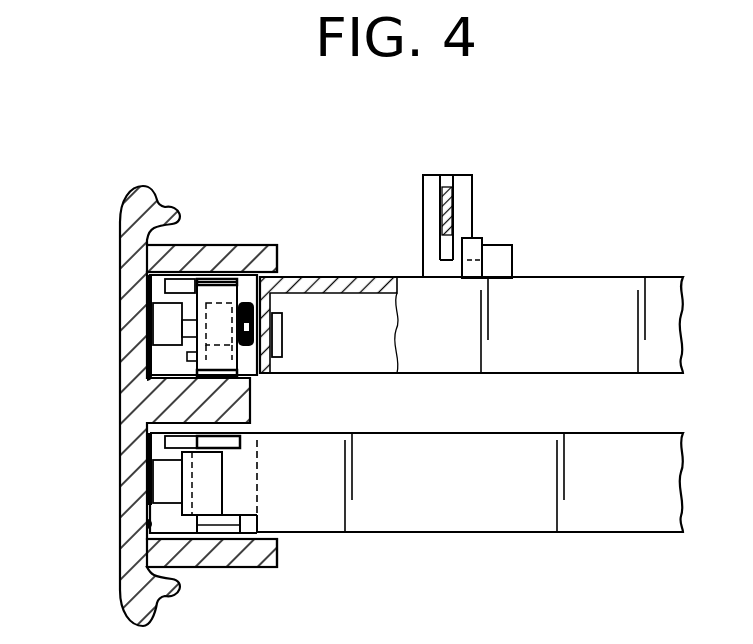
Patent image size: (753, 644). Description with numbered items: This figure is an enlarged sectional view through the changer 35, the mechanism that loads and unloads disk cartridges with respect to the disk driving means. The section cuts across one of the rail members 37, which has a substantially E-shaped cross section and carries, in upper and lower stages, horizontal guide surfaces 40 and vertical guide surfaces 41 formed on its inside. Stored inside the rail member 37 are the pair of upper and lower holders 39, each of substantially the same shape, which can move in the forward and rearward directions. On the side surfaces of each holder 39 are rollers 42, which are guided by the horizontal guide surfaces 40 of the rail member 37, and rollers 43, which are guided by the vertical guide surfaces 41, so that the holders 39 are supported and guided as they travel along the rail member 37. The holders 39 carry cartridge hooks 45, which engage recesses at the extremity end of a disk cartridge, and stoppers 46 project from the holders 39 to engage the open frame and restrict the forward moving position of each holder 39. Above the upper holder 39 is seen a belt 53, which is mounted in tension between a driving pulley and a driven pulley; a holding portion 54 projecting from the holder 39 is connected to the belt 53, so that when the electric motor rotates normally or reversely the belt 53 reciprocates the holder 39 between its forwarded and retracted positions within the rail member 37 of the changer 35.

The changer 35 is at (122, 205).
The rail member 37 is at (120, 408).
The holder 39 is at (627, 276).
The horizontal guide surface 40 is at (148, 289).
The vertical guide surface 41 is at (150, 372).
The roller 42 is at (240, 268).
The roller 43 is at (172, 313).
The cartridge hook 45 is at (210, 482).
The stopper 46 is at (487, 244).
The belt 53 is at (440, 212).
The holding portion 54 is at (460, 200).